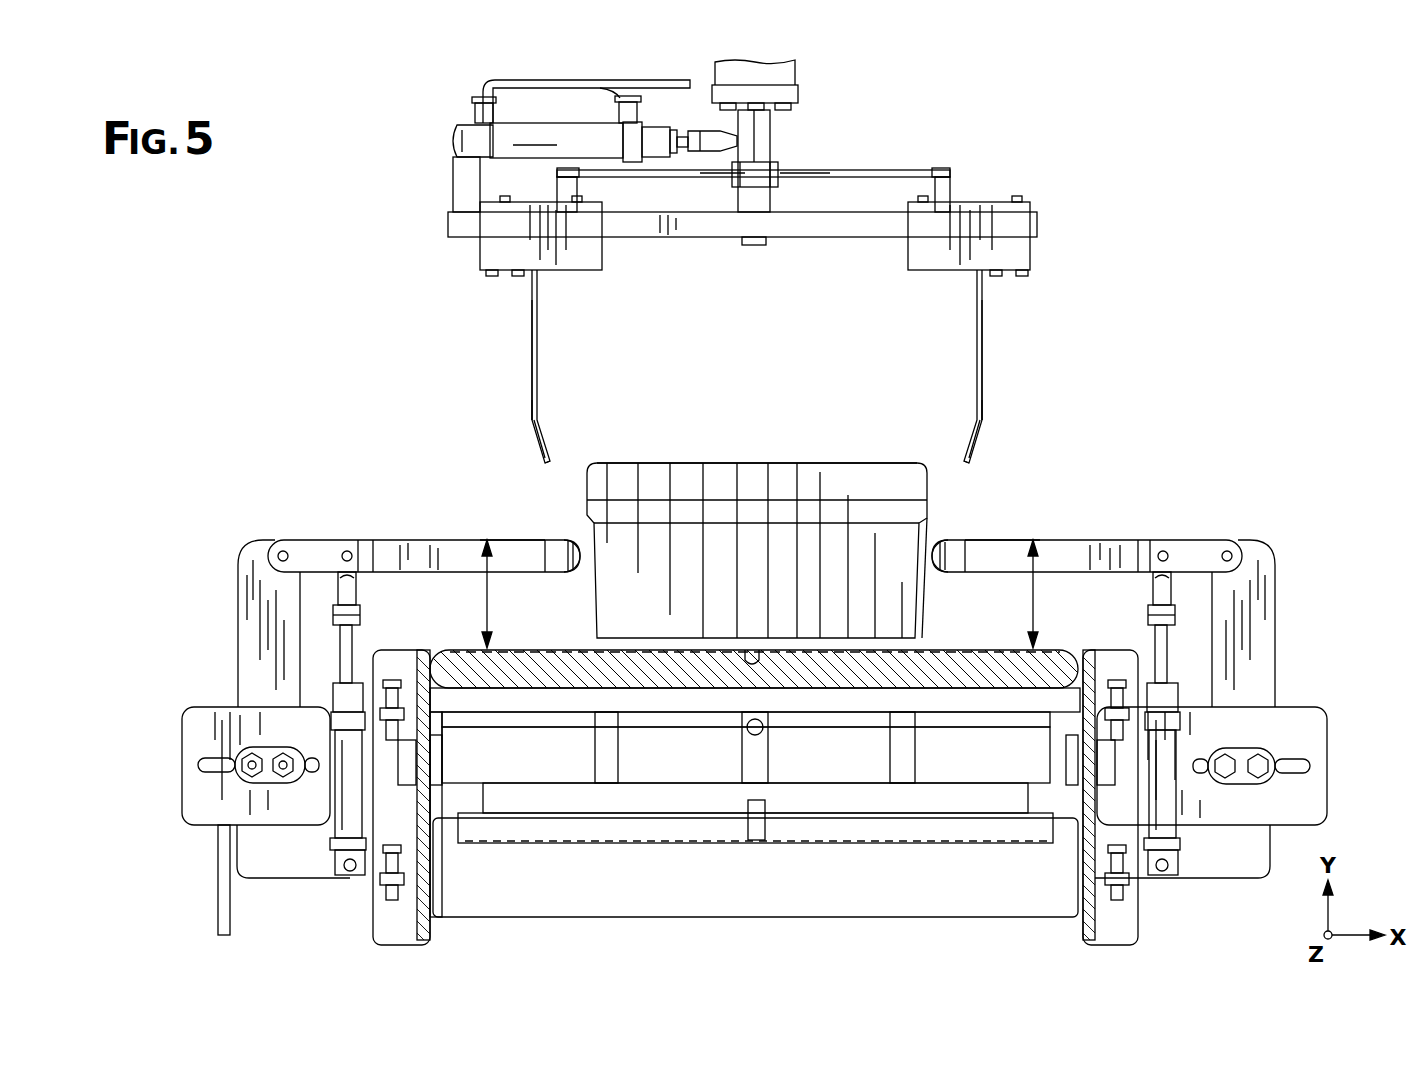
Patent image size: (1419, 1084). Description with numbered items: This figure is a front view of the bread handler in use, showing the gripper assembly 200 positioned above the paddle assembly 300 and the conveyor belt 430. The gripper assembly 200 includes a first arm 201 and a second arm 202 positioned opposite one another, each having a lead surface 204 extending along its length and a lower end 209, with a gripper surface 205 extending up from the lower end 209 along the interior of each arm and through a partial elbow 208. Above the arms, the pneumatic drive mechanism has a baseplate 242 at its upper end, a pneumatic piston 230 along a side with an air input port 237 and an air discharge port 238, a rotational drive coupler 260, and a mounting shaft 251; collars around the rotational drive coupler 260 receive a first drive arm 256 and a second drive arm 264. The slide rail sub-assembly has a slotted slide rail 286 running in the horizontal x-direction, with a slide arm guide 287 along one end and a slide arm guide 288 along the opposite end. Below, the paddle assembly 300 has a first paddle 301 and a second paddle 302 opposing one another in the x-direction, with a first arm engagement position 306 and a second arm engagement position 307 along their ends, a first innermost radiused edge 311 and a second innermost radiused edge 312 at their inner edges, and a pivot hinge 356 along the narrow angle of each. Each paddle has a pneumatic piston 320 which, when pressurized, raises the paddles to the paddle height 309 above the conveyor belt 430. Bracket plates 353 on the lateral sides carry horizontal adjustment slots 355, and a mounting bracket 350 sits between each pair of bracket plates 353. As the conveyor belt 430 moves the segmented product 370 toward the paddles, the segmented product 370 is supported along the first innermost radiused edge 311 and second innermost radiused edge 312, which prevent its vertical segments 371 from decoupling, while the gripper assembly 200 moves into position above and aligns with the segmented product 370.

The gripper assembly 200 is at (1025, 320).
The first arm 201 is at (982, 298).
The second arm 202 is at (532, 298).
The lead surface 204 is at (533, 345).
The gripper surface 205 is at (540, 425).
The partial elbow 208 is at (532, 410).
The lower end 209 is at (540, 463).
The pneumatic piston 230 is at (553, 130).
The air input port 237 is at (483, 98).
The air discharge port 238 is at (625, 97).
The baseplate 242 is at (800, 92).
The mounting shaft 251 is at (730, 195).
The first drive arm 256 is at (912, 170).
The rotational drive coupler 260 is at (778, 165).
The second drive arm 264 is at (637, 178).
The slotted slide rail 286 is at (826, 237).
The slide arm guide 287 is at (1032, 260).
The slide arm guide 288 is at (478, 250).
The paddle assembly 300 is at (1300, 596).
The first paddle 301 is at (1113, 540).
The second paddle 302 is at (410, 540).
The first arm engagement position 306 is at (965, 540).
The second arm engagement position 307 is at (545, 540).
The paddle height 309 is at (760, 594).
The first innermost radiused edge 311 is at (935, 540).
The second innermost radiused edge 312 is at (580, 540).
The pneumatic piston 320 is at (345, 800).
The mounting bracket 350 is at (238, 630).
The bracket plates 353 is at (195, 730).
The horizontal adjustment slots 355 is at (195, 770).
The pivot hinge 356 is at (283, 551).
The segmented product 370 is at (653, 621).
The vertical segments 371 is at (797, 463).
The conveyor belt 430 is at (470, 648).